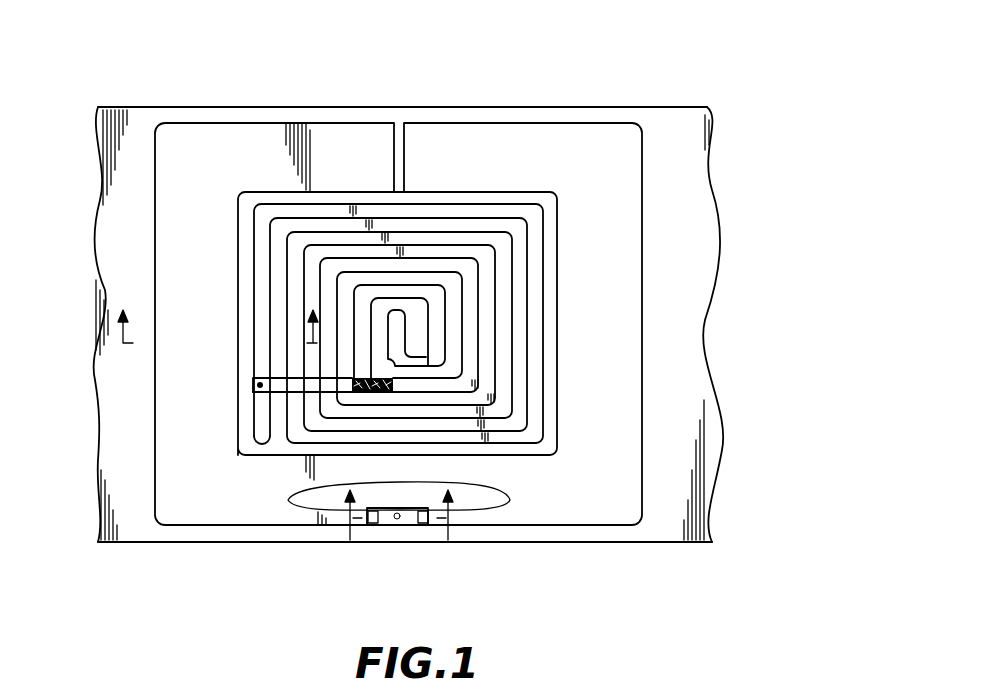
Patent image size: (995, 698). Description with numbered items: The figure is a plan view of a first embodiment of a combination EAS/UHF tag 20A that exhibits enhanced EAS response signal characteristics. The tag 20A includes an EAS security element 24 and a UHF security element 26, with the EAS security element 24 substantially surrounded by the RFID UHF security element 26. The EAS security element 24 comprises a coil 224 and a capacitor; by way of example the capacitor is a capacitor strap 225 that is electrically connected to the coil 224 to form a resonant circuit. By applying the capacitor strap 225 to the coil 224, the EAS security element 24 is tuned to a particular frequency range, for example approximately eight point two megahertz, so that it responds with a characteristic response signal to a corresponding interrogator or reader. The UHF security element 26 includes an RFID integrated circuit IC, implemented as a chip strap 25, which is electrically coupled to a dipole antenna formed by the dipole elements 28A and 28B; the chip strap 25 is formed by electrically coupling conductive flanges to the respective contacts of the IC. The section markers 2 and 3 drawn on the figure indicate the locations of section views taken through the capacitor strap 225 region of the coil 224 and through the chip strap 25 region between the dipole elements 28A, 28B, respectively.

The combination EAS/UHF tag 20A is at (432, 306).
The UHF security element 26 is at (655, 200).
The dipole element 28A is at (197, 508).
The dipole element 28B is at (627, 330).
The EAS security element 24 is at (366, 301).
The coil 224 is at (537, 230).
The capacitor strap 225 is at (280, 402).
The chip strap 25 is at (399, 547).
The RFID integrated circuit IC is at (402, 526).
The section line 2- 2 is at (218, 345).
The section line 3- 3 is at (399, 526).